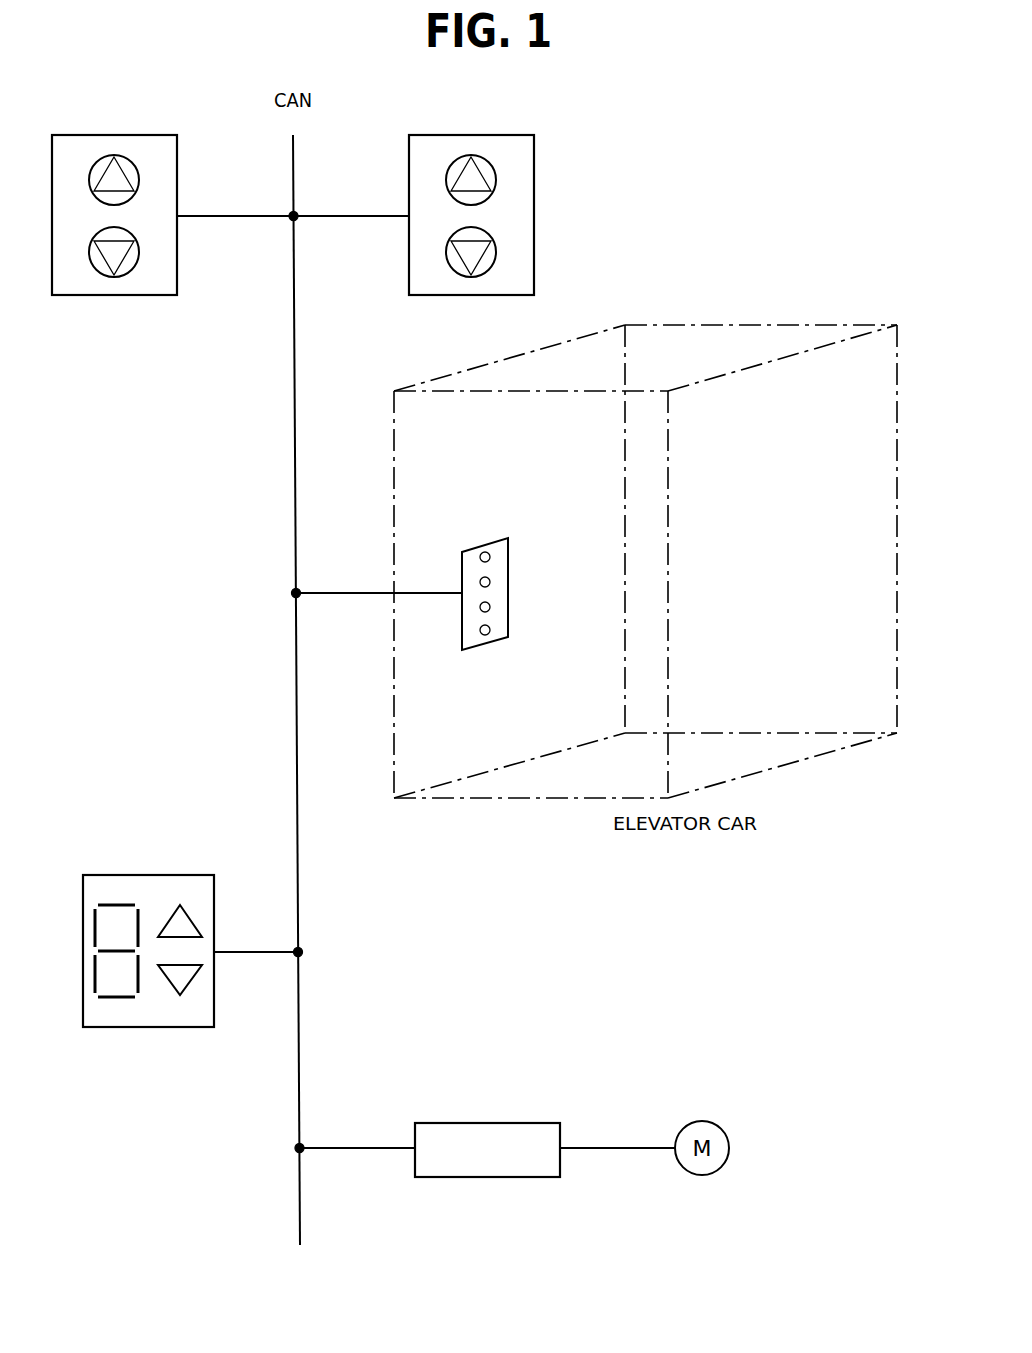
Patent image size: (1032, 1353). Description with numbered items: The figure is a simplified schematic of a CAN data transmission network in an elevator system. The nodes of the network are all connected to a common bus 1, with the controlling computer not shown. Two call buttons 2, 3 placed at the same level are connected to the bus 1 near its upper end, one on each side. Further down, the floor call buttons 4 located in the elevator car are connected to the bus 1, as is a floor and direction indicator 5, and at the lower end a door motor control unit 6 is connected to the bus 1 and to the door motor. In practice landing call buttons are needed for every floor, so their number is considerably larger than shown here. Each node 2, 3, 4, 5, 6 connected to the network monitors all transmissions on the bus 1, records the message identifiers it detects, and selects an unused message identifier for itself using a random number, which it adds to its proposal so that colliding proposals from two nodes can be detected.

The bus 1 is at (298, 888).
The call button 2 is at (147, 288).
The call button 3 is at (525, 188).
The floor call buttons 4 is at (508, 593).
The floor and direction indicator 5 is at (158, 882).
The door motor control unit 6 is at (490, 1127).